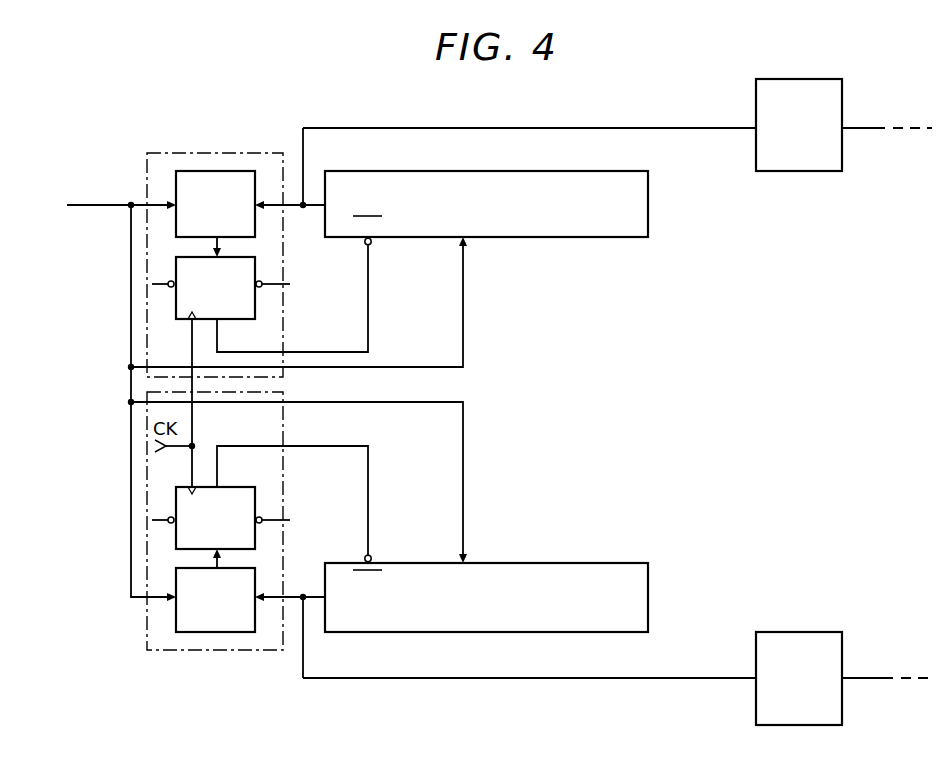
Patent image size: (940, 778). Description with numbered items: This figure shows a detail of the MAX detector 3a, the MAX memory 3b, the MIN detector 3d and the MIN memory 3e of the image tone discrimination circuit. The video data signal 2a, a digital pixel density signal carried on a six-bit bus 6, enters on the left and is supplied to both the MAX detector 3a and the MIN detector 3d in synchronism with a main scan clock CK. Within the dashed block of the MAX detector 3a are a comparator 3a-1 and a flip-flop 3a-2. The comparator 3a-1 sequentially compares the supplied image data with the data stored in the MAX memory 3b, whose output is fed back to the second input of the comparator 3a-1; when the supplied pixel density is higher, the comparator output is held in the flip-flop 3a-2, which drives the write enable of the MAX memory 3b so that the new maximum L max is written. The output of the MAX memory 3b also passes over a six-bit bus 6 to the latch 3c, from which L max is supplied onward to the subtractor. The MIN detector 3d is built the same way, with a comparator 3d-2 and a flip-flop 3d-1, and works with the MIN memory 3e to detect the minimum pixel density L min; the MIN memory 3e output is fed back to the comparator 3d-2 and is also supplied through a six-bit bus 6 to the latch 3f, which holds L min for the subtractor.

The video data signal 2a is at (94, 203).
The 6-bit signal width 6 is at (110, 211).
The MAX detector 3a is at (283, 245).
The comparator 3a-1 is at (216, 171).
The flip-flop 3a-2 is at (255, 303).
The MAX memory 3b is at (598, 171).
The latch 3c is at (807, 79).
The MIN detector 3d is at (283, 418).
The flip-flop 3d-1 is at (255, 495).
The comparator 3d-2 is at (220, 632).
The MIN memory 3e is at (598, 563).
The latch 3f is at (806, 632).